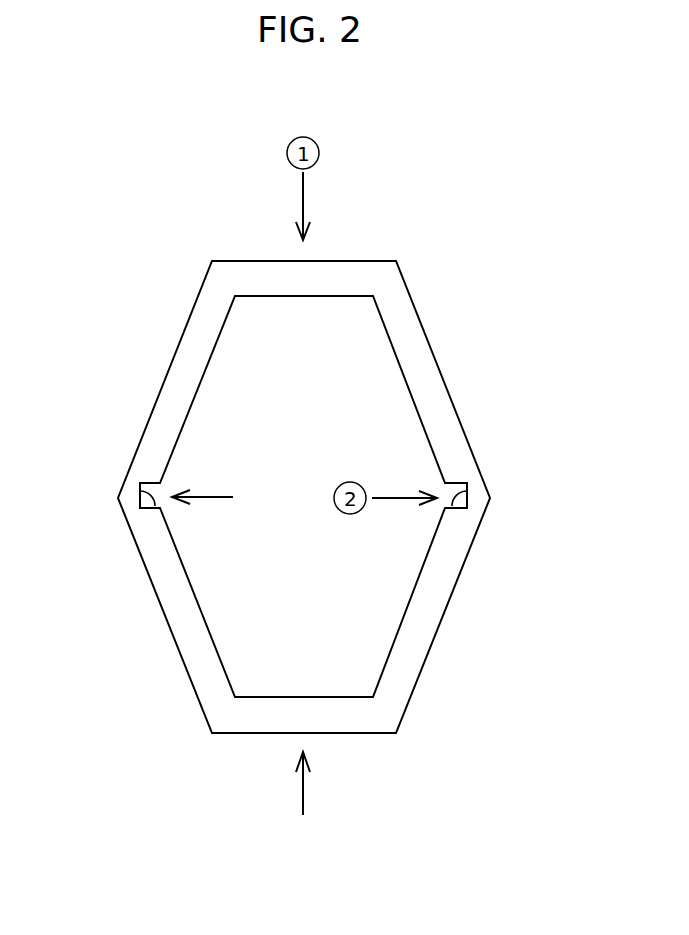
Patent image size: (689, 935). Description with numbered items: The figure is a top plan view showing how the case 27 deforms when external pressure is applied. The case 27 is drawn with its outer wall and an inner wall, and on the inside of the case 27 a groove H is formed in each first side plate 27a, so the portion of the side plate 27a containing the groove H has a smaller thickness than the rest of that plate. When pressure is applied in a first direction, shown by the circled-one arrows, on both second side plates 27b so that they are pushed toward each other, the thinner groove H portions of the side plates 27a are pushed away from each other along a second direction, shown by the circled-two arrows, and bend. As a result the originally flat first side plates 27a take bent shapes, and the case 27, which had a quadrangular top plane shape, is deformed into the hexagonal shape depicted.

The case 27 is at (443, 618).
The side plate 27a is at (424, 371).
The second side plate 27b is at (348, 274).
The groove H is at (141, 489).